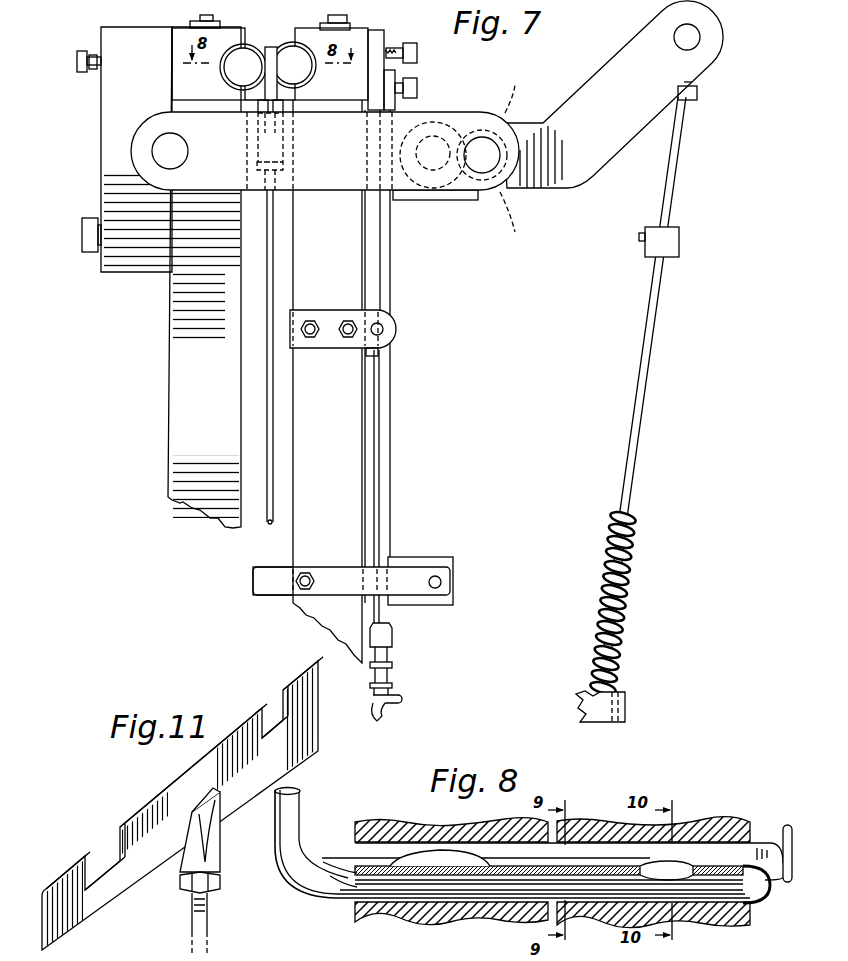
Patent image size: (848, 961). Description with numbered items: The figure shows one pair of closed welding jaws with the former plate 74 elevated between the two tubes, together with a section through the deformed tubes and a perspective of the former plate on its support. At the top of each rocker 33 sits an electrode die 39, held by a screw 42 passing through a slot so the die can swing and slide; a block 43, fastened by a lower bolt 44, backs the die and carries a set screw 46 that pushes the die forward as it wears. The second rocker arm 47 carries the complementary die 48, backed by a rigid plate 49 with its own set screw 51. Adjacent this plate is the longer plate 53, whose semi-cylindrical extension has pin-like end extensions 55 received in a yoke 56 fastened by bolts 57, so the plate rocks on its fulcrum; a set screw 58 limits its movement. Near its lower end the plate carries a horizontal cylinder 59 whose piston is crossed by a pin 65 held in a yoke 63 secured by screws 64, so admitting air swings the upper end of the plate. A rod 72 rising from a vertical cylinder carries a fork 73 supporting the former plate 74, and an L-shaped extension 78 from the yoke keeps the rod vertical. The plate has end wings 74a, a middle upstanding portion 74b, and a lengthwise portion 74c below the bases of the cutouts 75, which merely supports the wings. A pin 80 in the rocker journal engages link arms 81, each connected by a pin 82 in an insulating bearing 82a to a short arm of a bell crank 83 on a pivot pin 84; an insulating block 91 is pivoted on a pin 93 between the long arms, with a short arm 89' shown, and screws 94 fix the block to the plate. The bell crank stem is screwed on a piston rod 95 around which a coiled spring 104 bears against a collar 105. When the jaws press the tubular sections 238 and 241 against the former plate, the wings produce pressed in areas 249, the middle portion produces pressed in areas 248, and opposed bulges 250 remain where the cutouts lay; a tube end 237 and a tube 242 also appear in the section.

In FIG. 7, the rocker 33 is at (168, 404).
In FIG. 7, the electrode die 39 is at (246, 16).
In FIG. 8, the electrode die 39 is at (413, 803).
In FIG. 7, the screw 42 is at (196, 18).
In FIG. 7, the block 43 is at (101, 138).
In FIG. 7, the lower bolt 44 is at (82, 232).
In FIG. 7, the set screw 46 is at (79, 72).
In FIG. 7, the second rocker arm 47 is at (352, 508).
In FIG. 7, the complementary die 48 is at (385, 29).
In FIG. 8, the complementary die 48 is at (506, 922).
In FIG. 7, the rigid plate 49 is at (396, 46).
In FIG. 7, the set screw 51 is at (417, 55).
In FIG. 7, the rigid plate or arm 53 is at (386, 433).
In FIG. 7, the pin-like end extensions 55 is at (383, 329).
In FIG. 7, the yoke 56 is at (327, 348).
In FIG. 7, the bolts 57 is at (317, 319).
In FIG. 7, the set screw 58 is at (417, 88).
In FIG. 7, the horizontal cylinder 59 is at (432, 557).
In FIG. 7, the yoke 63 is at (302, 596).
In FIG. 7, the screws 64 is at (318, 572).
In FIG. 7, the pin 65 is at (445, 582).
In FIG. 7, the rod 72 is at (267, 523).
In FIG. 11, the rod 72 is at (209, 910).
In FIG. 11, the fork 73 is at (217, 850).
In FIG. 7, the former plate 74 is at (275, 44).
In FIG. 11, the former plate 74 is at (153, 787).
In FIG. 11, the end wings 74a is at (64, 864).
In FIG. 8, the end wings 74a is at (350, 887).
In FIG. 11, the middle upstanding portion 74b is at (163, 783).
In FIG. 8, the middle upstanding portion 74b is at (512, 876).
In FIG. 11, the lengthwise portion 74c is at (116, 894).
In FIG. 11, the rectangular cutouts 75 is at (98, 851).
In FIG. 8, the rectangular cutouts 75 is at (428, 860).
In FIG. 7, the L-shaped extension 78 is at (253, 581).
In FIG. 7, the pin 80 is at (186, 148).
In FIG. 7, the link arms 81 is at (253, 192).
In FIG. 7, the pin 82 is at (494, 172).
In FIG. 7, the bearing 82a is at (480, 112).
In FIG. 7, the bell crank 83 is at (538, 120).
In FIG. 7, the pivot pin 84 is at (700, 35).
In FIG. 7, the bearing 89' is at (557, 211).
In FIG. 7, the block 91 is at (418, 200).
In FIG. 7, the pin 93 is at (442, 174).
In FIG. 7, the screws 94 is at (516, 112).
In FIG. 7, the piston rod 95 is at (678, 131).
In FIG. 7, the coiled spring 104 is at (628, 519).
In FIG. 7, the collar 105 is at (679, 244).
In FIG. 8, the head 237 is at (780, 822).
In FIG. 7, the tubular section 238 is at (226, 84).
In FIG. 8, the tubular section 238 is at (723, 842).
In FIG. 7, the tubular section 241 is at (311, 79).
In FIG. 8, the tubular section 241 is at (393, 920).
In FIG. 8, the tube 242 is at (304, 788).
In FIG. 8, the pressed in areas 248 is at (510, 880).
In FIG. 8, the pressed in areas 249 is at (365, 857).
In FIG. 8, the bulges 250 is at (444, 860).